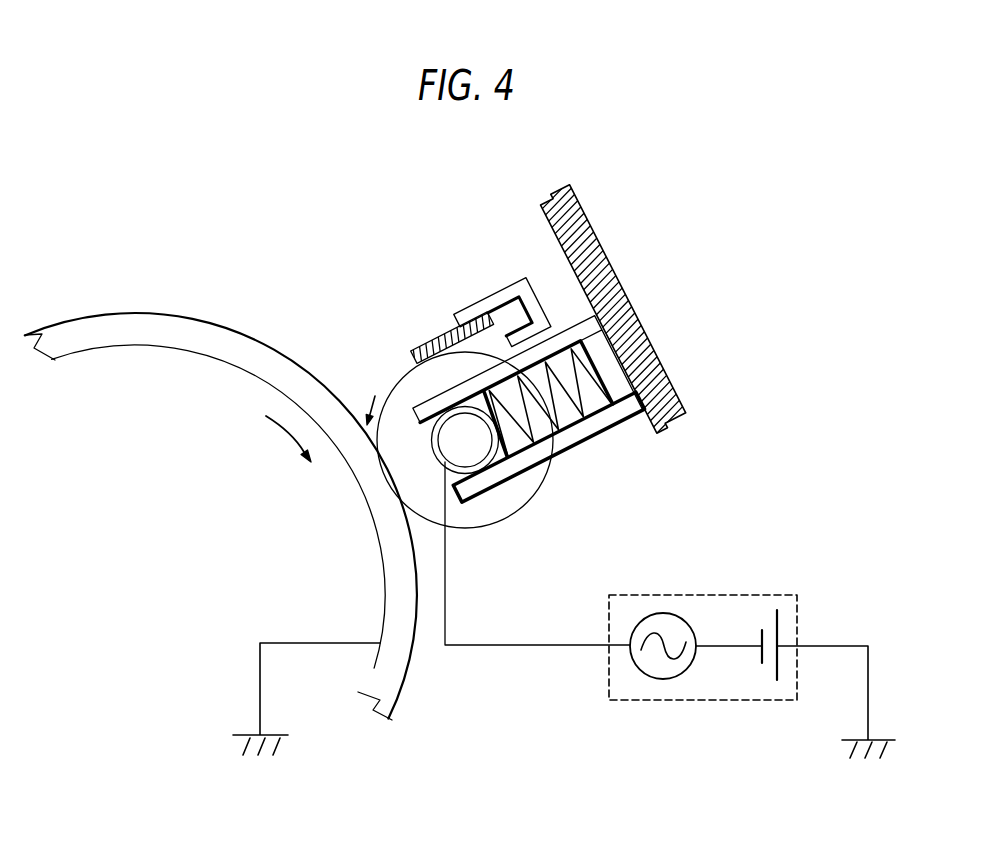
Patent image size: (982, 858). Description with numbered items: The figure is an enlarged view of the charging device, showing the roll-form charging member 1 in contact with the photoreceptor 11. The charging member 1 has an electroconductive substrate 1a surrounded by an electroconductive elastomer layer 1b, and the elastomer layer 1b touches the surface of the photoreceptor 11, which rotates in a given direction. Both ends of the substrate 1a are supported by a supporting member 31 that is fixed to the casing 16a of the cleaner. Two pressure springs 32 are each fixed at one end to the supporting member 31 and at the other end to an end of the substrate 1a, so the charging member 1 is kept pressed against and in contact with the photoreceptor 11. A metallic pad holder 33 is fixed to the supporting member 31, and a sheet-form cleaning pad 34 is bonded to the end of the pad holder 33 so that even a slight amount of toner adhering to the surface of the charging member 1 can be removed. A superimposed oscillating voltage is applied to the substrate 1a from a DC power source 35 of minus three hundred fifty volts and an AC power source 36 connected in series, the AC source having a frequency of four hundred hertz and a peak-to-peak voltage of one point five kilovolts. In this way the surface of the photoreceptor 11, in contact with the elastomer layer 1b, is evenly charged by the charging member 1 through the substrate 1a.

The charging member 1 is at (504, 405).
The electroconductive substrate 1a is at (438, 461).
The electroconductive elastomer layer 1b is at (489, 510).
The photoreceptor 11 is at (230, 360).
The casing 16a is at (588, 227).
The supporting member 31 is at (613, 372).
The pressure spring 32 is at (600, 398).
The pad holder 33 is at (489, 295).
The cleaning pad 34 is at (413, 344).
The DC power source 35 is at (770, 680).
The AC power source 36 is at (665, 680).